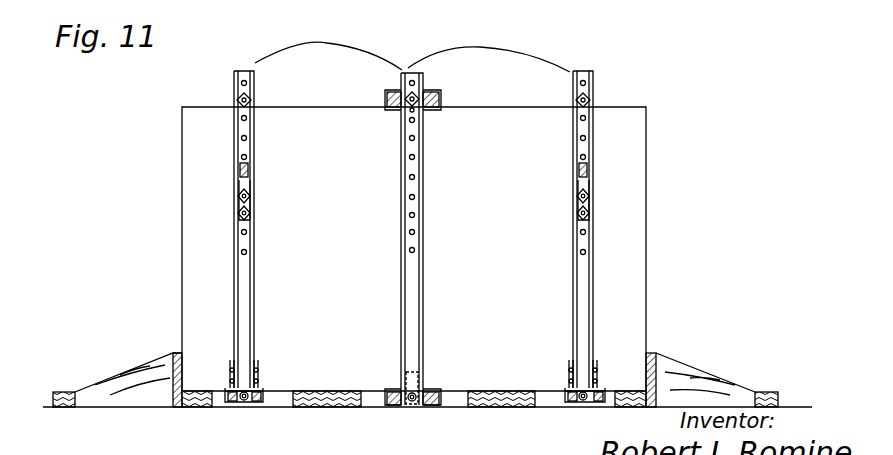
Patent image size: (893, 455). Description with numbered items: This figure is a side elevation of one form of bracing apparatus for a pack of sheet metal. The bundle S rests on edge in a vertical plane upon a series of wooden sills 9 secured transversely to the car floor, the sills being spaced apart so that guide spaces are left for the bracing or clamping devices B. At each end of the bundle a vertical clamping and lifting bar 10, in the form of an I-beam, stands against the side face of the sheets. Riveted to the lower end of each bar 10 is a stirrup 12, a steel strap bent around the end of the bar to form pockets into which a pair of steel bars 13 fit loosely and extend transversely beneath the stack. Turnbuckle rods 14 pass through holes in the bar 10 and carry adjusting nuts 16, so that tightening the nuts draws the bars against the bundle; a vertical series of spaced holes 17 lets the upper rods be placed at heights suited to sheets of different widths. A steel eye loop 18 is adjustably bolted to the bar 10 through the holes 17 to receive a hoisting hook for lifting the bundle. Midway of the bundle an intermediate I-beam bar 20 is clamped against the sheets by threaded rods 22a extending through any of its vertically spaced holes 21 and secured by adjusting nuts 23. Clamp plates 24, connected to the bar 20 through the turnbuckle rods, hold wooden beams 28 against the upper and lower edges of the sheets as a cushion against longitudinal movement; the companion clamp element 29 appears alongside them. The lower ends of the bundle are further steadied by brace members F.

The wooden sills 9 is at (200, 400).
The vertical clamping and lifting bar 10 is at (250, 277).
The stirrup 12 is at (256, 388).
The steel bars 13 is at (230, 392).
The turnbuckle rods 14 is at (247, 100).
The adjusting nut 16 is at (251, 100).
The spaced holes 17 is at (247, 138).
The steel eye loop 18 is at (248, 173).
The intermediate I-beam bar 20 is at (419, 275).
The vertically spaced holes 21 is at (414, 215).
The threaded rods 22a is at (416, 104).
The adjusting nuts 23 is at (417, 97).
The clamp plates 24 is at (395, 92).
The wooden beams 28 is at (441, 99).
The clamp block 29 is at (392, 107).
The bundle S is at (646, 243).
The brace members F is at (177, 354).
The bracing or clamping devices B is at (412, 47).